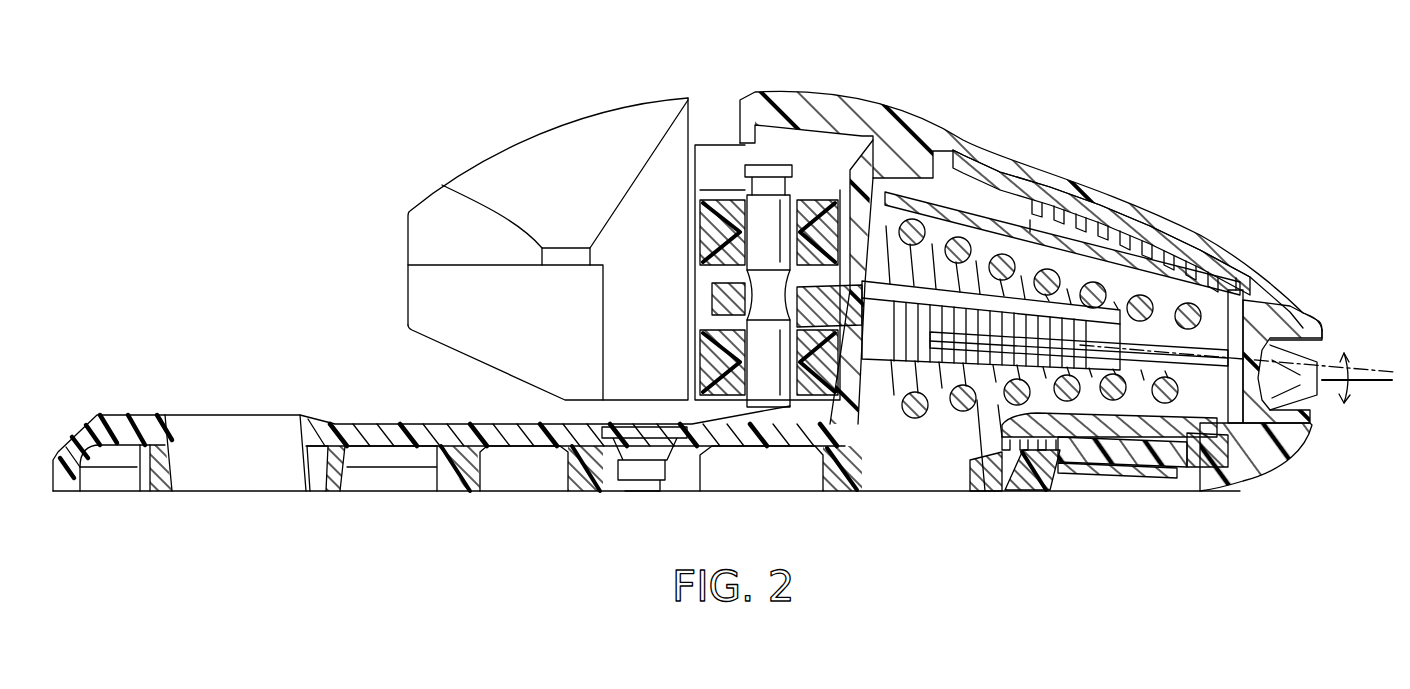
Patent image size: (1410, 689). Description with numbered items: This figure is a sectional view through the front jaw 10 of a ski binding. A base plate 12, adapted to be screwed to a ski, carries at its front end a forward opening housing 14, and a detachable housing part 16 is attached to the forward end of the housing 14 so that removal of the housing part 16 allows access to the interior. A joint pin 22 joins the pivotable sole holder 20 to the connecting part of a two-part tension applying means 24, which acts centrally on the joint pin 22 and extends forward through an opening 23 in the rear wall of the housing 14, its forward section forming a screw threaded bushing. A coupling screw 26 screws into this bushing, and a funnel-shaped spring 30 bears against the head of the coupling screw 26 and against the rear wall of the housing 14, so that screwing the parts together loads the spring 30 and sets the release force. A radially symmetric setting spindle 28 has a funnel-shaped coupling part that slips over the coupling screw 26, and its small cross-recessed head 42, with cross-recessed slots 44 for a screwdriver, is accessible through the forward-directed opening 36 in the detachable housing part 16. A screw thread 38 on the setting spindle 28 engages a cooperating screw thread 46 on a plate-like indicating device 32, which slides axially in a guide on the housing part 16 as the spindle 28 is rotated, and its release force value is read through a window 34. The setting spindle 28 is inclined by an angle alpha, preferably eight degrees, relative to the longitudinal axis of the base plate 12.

The front jaw 10 is at (374, 164).
The base plate 12 is at (447, 484).
The forward opening housing 14 is at (786, 92).
The detachable housing part 16 is at (1246, 475).
The sole holder 20 is at (564, 140).
The joint pin 22 is at (764, 390).
The opening 23 is at (866, 268).
The tension applying means 24 is at (882, 355).
The coupling screw 26 is at (1146, 368).
The setting spindle 28 is at (1190, 443).
The funnel-shaped spring 30 is at (918, 416).
The indicating device 32 is at (1135, 232).
The window 34 is at (1090, 196).
The forward-directed opening 36 is at (1292, 425).
The screw thread 38 is at (1008, 440).
The cross-recessed head 42 is at (1300, 312).
The cross-recessed slots 44 is at (1320, 368).
The cooperating screw thread 46 is at (1043, 228).